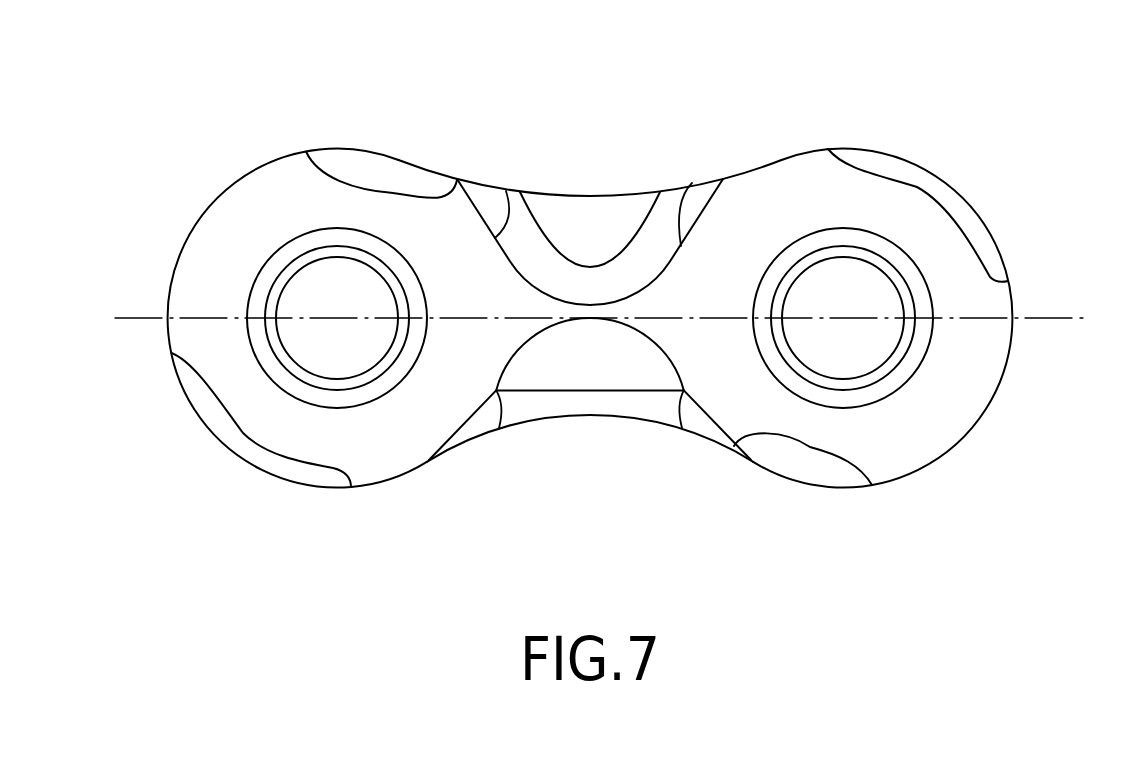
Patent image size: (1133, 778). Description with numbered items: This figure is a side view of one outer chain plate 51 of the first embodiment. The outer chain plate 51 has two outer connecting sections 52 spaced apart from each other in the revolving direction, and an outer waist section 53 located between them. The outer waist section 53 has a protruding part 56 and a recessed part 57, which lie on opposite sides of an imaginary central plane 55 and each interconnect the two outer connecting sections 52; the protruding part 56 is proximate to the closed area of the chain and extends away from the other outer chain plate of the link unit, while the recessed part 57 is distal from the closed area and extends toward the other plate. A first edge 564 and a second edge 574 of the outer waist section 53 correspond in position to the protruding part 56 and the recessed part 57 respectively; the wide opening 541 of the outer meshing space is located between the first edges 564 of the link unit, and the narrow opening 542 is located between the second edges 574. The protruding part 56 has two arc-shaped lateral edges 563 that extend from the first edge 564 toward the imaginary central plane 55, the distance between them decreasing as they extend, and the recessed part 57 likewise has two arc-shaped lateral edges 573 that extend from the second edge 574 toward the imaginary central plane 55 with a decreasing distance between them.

The outer chain plate 51 is at (618, 294).
The outer connecting section 52 is at (260, 417).
The outer waist section 53 is at (592, 294).
The imaginary central plane 55 is at (1050, 317).
The wide opening 541 is at (640, 418).
The narrow opening 542 is at (610, 197).
The protruding part 56 is at (590, 421).
The lateral edge 563 is at (499, 428).
The first edge 564 is at (605, 410).
The recessed part 57 is at (621, 186).
The lateral edge 573 is at (506, 191).
The second edge 574 is at (589, 200).